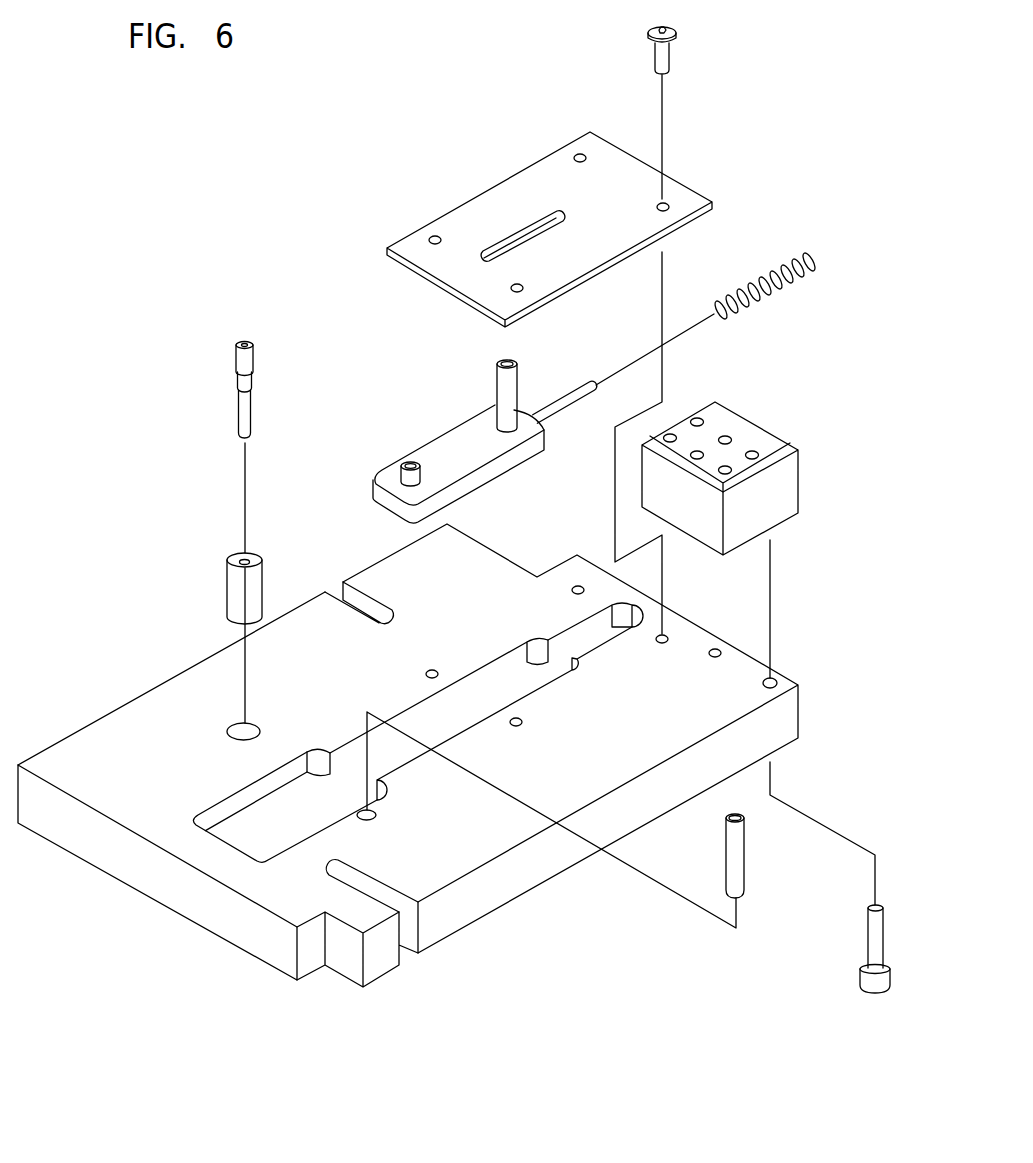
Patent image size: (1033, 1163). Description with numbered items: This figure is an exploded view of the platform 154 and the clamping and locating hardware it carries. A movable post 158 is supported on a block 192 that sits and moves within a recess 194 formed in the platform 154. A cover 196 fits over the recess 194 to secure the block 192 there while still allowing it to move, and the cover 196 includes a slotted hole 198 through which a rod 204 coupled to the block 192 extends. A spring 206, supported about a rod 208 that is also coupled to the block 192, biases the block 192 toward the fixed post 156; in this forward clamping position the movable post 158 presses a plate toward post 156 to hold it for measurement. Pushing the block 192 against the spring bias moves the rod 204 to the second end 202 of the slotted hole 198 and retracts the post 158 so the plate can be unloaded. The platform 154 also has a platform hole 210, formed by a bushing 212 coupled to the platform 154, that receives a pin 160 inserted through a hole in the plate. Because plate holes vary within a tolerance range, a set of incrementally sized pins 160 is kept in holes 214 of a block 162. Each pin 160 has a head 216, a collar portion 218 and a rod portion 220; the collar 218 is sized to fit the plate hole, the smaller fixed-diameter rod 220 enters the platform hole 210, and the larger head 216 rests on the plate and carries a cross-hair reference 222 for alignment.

The platform 154 is at (136, 737).
The post 156 is at (736, 855).
The movable post 158 is at (410, 467).
The pin 160 is at (223, 328).
The block 162 is at (764, 452).
The block 192 is at (468, 462).
The recess 194 is at (243, 855).
The cover 196 is at (544, 229).
The slotted hole 198 is at (503, 217).
The second end 202 is at (563, 215).
The rod 204 is at (512, 388).
The spring 206 is at (815, 257).
The rod 208 is at (560, 407).
The platform hole 210 is at (248, 560).
The bushing 212 is at (273, 562).
The holes 214 is at (752, 454).
The head 216 is at (236, 358).
The collar portion 218 is at (243, 377).
The rod portion 220 is at (238, 414).
The cross-hair reference 222 is at (252, 343).